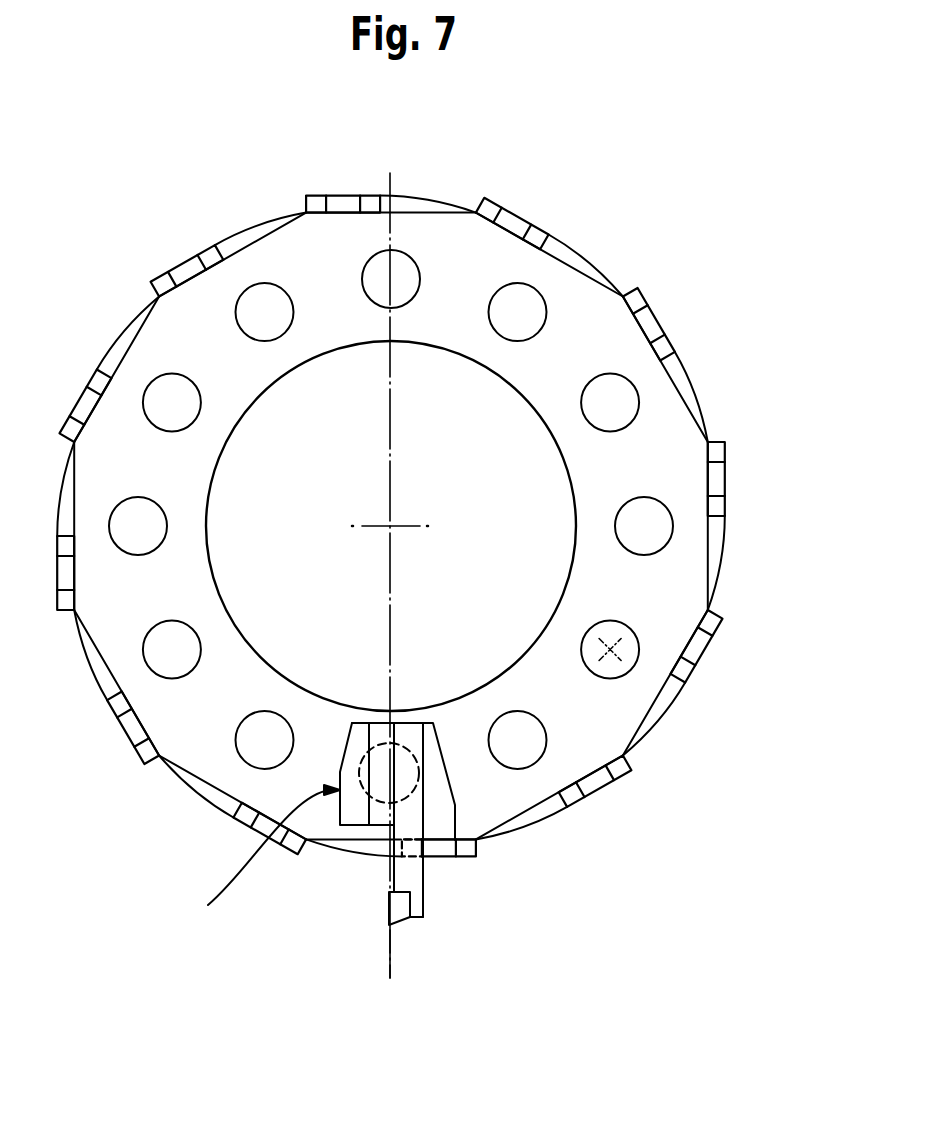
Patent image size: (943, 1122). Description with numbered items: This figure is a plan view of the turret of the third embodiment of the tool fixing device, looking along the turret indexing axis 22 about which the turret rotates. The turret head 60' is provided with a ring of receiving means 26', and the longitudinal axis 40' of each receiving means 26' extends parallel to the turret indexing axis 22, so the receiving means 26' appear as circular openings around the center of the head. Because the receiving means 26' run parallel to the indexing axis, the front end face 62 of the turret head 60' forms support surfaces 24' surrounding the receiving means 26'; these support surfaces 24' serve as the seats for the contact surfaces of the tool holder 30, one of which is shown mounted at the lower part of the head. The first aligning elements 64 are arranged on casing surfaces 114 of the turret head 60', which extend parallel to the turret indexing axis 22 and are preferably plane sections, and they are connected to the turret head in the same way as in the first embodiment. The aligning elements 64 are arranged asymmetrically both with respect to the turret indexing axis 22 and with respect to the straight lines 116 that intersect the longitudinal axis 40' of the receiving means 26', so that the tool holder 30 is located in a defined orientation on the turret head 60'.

The turret indexing axis 22 is at (391, 527).
The support surfaces 24' is at (592, 818).
The receiving means 26' is at (703, 675).
The tool holder 30 is at (264, 863).
The longitudinal axis 40' is at (721, 657).
The turret head 60' is at (459, 525).
The front end face 62 is at (590, 708).
The first aligning elements 64 is at (447, 858).
The casing surfaces 114 is at (345, 842).
The straight lines 116 is at (390, 955).